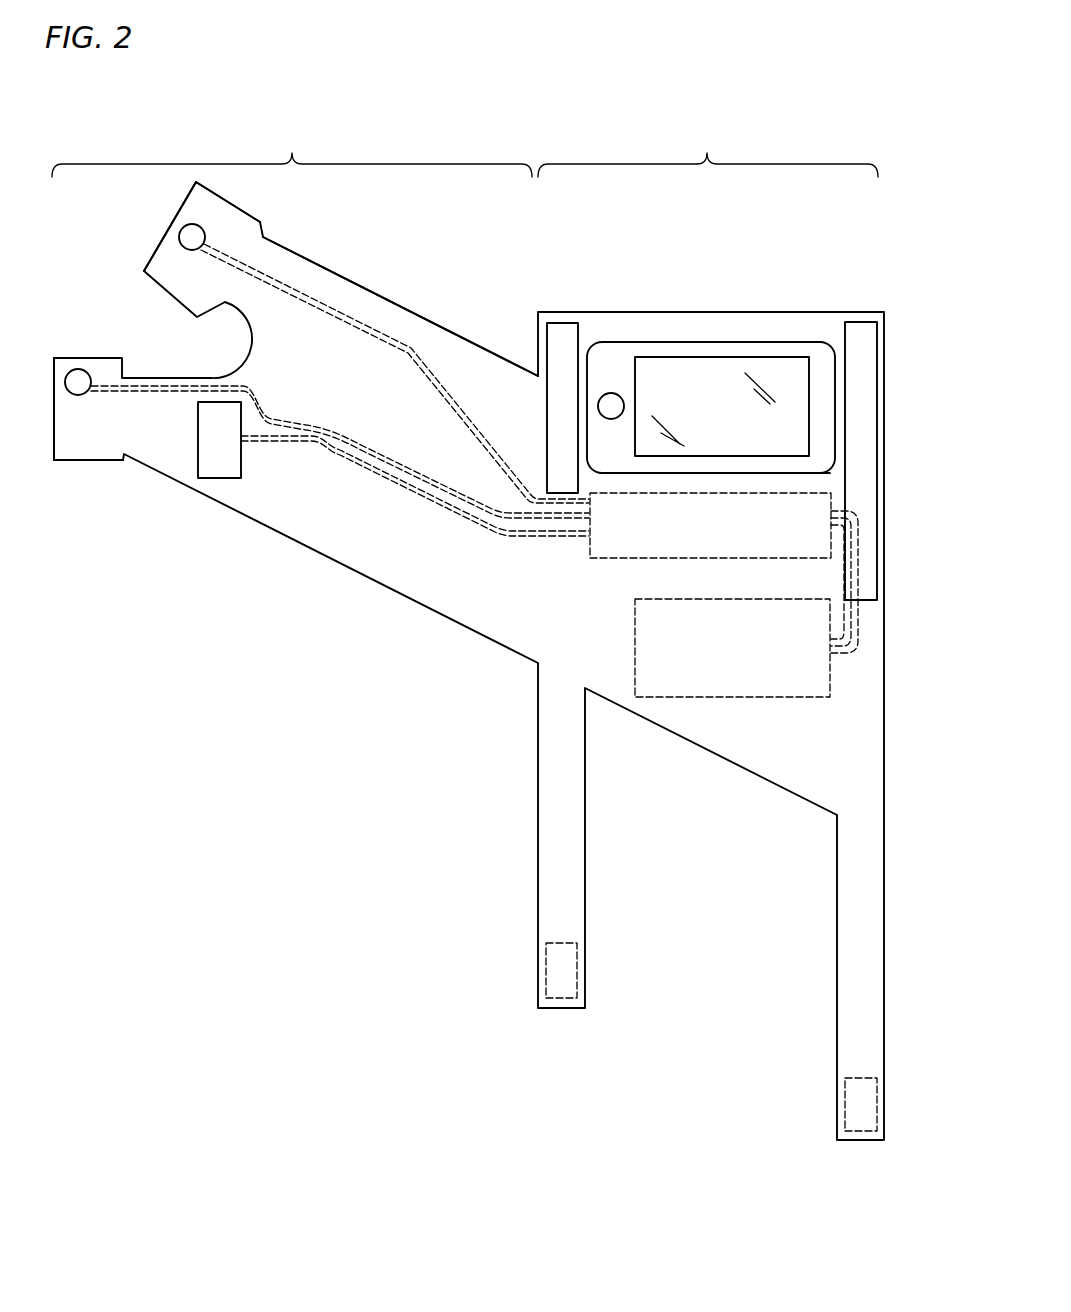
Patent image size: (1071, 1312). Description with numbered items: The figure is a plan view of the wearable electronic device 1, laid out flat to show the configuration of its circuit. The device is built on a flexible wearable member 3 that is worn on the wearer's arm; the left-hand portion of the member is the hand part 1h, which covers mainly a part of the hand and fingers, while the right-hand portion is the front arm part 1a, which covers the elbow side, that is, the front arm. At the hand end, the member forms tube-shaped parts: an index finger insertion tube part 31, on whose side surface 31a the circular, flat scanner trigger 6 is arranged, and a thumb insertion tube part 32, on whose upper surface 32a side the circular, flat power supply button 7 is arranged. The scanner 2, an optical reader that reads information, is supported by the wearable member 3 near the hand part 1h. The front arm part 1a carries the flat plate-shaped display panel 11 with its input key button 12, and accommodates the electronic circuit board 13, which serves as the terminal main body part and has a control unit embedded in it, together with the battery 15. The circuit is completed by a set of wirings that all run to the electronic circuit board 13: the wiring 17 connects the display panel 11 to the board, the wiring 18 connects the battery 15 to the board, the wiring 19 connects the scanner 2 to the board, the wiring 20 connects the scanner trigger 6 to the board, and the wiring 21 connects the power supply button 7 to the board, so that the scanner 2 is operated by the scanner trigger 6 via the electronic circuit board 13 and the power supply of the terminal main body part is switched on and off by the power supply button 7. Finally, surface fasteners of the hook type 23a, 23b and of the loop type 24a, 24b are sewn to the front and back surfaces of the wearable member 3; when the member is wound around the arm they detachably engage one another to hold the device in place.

The wearable electronic device 1 is at (318, 602).
The hand part 1h is at (292, 146).
The front arm part 1a is at (708, 146).
The scanner 2 is at (215, 470).
The wearable member 3 is at (375, 293).
The scanner trigger 6 is at (79, 382).
The power supply button 7 is at (184, 238).
The display panel 11 is at (762, 342).
The input key button 12 is at (611, 406).
The electronic circuit board 13 is at (828, 512).
The battery 15 is at (780, 698).
The wiring 17 is at (807, 473).
The wiring 18 is at (853, 620).
The wiring 19 is at (455, 513).
The wiring 20 is at (207, 372).
The wiring 21 is at (310, 295).
The surface fastener (hook) 23a is at (558, 998).
The surface fastener (hook) 23b is at (860, 1131).
The surface fastener (loop) 24a is at (556, 352).
The surface fastener (loop) 24b is at (865, 370).
The index finger insertion tube part 31 is at (85, 463).
The side surface 31a is at (55, 382).
The thumb insertion tube part 32 is at (233, 202).
The upper surface 32a is at (172, 228).